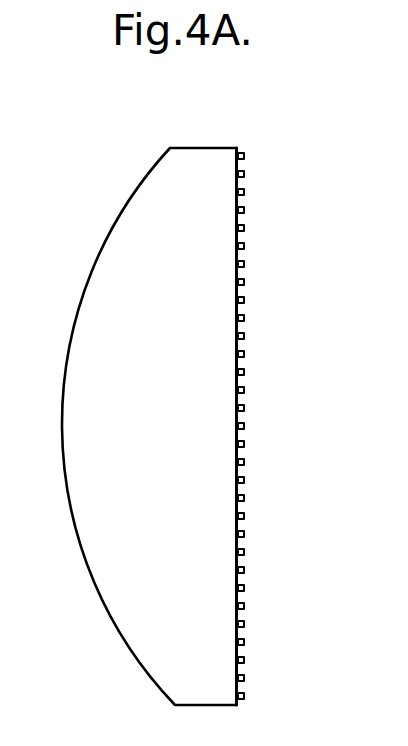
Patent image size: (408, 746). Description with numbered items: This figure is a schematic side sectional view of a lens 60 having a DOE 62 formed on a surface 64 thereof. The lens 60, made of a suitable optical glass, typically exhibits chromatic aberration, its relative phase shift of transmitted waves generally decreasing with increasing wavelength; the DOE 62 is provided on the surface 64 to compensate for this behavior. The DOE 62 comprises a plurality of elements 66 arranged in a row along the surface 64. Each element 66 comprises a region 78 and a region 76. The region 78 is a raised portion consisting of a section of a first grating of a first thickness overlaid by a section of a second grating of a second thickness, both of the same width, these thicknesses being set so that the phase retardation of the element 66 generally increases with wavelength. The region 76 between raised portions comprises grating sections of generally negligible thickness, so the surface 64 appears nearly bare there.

The lens 60 is at (122, 212).
The DOE 62 is at (262, 642).
The surface 64 is at (239, 147).
The element 66 is at (262, 365).
The region 76 is at (241, 217).
The region 78 is at (242, 192).